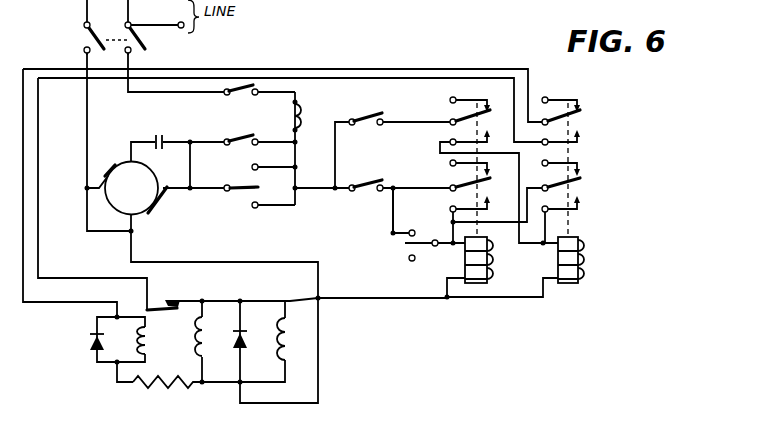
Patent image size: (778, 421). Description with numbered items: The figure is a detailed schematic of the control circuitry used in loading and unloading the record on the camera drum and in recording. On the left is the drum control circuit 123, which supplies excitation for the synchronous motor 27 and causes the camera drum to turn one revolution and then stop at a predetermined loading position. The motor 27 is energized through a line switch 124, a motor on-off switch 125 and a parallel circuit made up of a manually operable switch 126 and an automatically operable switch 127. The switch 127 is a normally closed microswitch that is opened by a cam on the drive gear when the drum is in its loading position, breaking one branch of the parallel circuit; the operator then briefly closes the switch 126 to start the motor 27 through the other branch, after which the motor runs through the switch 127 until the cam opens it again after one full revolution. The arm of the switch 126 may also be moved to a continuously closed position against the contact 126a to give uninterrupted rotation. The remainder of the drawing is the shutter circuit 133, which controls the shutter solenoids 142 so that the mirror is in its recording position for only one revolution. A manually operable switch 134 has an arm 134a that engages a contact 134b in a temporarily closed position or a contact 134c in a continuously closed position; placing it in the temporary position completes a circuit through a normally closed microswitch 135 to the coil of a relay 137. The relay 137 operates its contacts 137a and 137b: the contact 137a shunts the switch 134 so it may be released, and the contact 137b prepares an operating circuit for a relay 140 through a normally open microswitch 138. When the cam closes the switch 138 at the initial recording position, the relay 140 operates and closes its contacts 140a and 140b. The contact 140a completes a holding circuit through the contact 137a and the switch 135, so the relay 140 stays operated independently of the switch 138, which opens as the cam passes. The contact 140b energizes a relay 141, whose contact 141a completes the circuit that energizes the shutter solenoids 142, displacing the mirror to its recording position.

The synchronous motor 27 is at (124, 172).
The drum control circuit 123 is at (219, 219).
The line switch 124 is at (76, 39).
The motor on-off switch 125 is at (244, 94).
The manually operable switch 126 is at (247, 192).
The contact 126a is at (252, 164).
The automatically operable switch 127 is at (244, 137).
The shutter control circuit 133 is at (381, 239).
The manually operable switch 134 is at (427, 260).
The arm 134a is at (425, 240).
The contact 134b is at (409, 230).
The contact 134c is at (409, 260).
The normally closed microswitch 135 is at (361, 184).
The relay 137 is at (488, 283).
The relay contact 137a is at (468, 181).
The relay contact 137b is at (468, 113).
The normally open microswitch 138 is at (364, 119).
The relay 140 is at (578, 281).
The relay contact 140a is at (582, 183).
The relay contact 140b is at (582, 117).
The relay 141 is at (135, 352).
The relay contact 141a is at (163, 303).
The shutter solenoids 142 is at (209, 337).